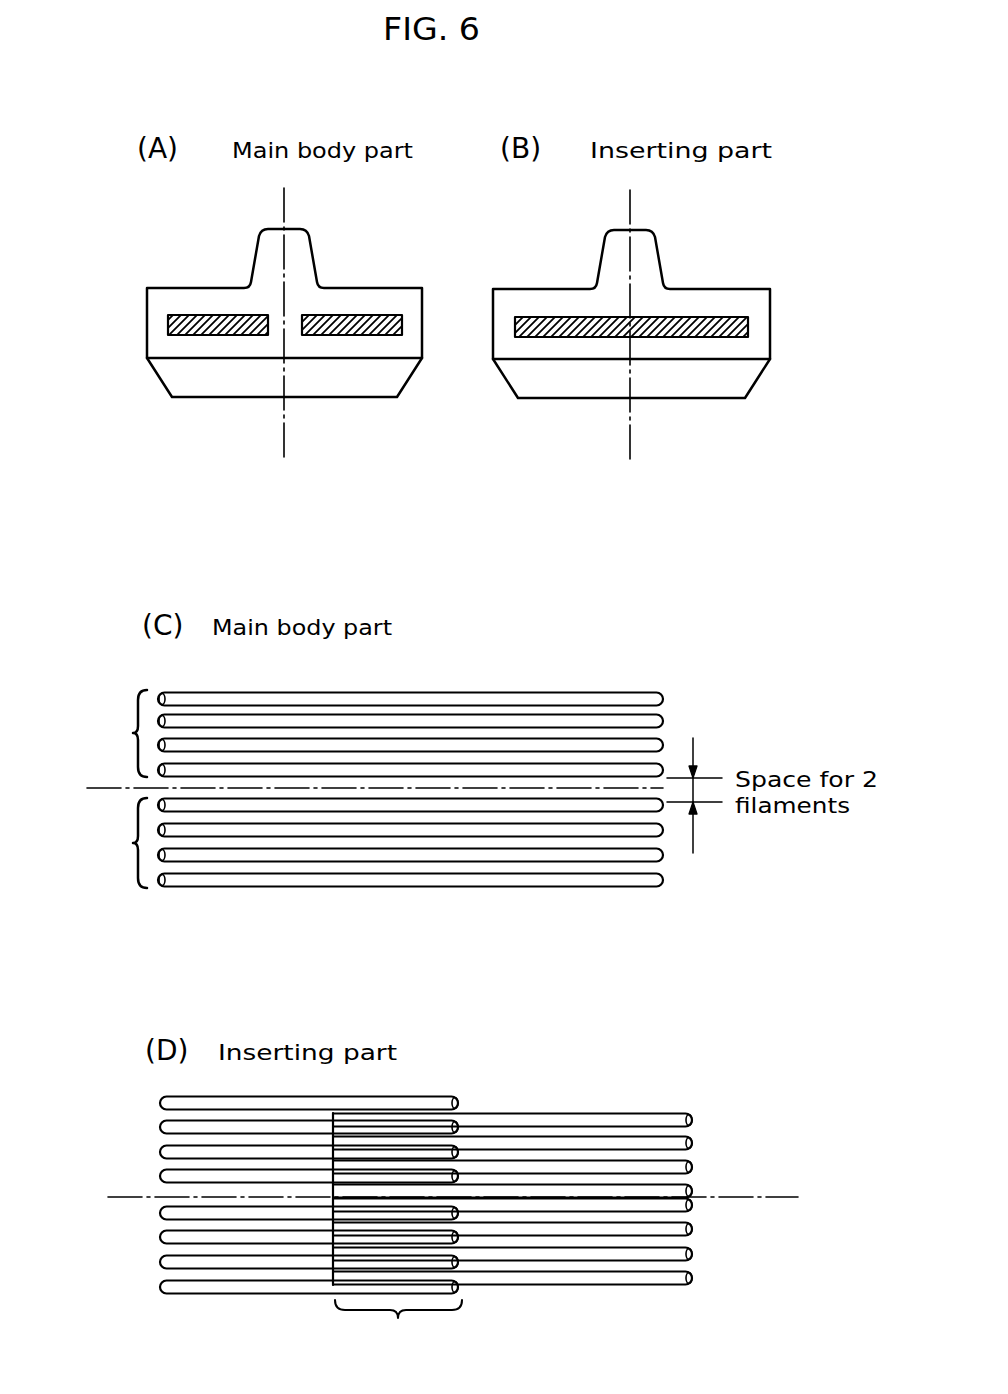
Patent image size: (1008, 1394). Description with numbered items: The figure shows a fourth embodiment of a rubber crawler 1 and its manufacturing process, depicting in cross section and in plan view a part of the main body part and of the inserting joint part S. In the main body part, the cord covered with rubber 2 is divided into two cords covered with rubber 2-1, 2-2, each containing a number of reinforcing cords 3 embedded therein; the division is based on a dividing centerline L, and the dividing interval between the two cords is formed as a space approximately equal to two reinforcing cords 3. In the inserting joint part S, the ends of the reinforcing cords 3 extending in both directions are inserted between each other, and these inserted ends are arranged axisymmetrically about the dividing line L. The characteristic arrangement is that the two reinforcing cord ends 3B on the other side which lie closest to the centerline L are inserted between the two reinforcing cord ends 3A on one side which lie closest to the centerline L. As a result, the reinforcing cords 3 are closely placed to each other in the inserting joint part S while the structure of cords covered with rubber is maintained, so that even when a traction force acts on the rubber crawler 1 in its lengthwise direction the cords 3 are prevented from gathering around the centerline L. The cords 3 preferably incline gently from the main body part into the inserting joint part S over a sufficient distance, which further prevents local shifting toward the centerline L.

The rubber crawler 1 is at (355, 301).
The cord covered with rubber 2 is at (565, 338).
The cord covered with rubber 2-1 is at (210, 336).
The cord covered with rubber 2-2 is at (348, 336).
The main cords (reinforcing cords) 3 is at (512, 721).
The reinforcing cords on one side 3A is at (243, 1262).
The reinforcing cords on the other side 3B is at (625, 1252).
The dividing line L is at (283, 434).
The inserting joint part S is at (398, 1329).